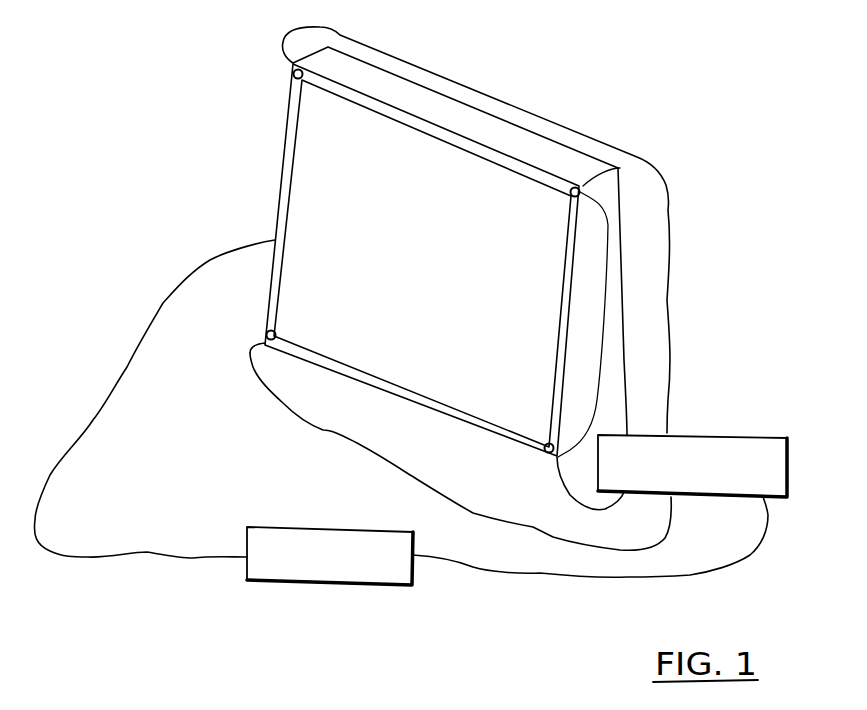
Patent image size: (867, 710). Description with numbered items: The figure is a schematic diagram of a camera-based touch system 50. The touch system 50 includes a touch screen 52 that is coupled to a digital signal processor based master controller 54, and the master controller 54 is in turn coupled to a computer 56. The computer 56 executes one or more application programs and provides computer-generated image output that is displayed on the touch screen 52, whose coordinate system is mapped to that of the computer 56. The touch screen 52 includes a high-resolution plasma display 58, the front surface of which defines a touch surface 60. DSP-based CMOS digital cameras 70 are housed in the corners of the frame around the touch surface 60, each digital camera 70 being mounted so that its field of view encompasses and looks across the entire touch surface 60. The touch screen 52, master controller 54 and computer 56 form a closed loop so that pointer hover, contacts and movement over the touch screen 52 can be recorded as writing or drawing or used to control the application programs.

The camera-based touch system 50 is at (697, 127).
The touch screen 52 is at (493, 102).
The master controller 54 is at (723, 438).
The computer 56 is at (342, 582).
The plasma display 58 is at (589, 280).
The touch surface 60 is at (487, 297).
The digital cameras 70 is at (534, 434).